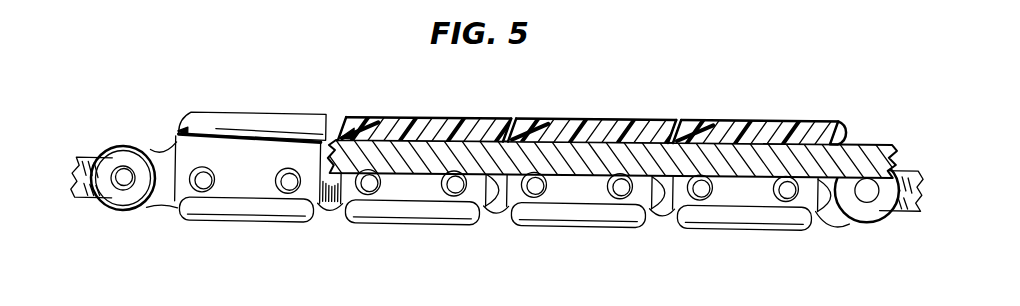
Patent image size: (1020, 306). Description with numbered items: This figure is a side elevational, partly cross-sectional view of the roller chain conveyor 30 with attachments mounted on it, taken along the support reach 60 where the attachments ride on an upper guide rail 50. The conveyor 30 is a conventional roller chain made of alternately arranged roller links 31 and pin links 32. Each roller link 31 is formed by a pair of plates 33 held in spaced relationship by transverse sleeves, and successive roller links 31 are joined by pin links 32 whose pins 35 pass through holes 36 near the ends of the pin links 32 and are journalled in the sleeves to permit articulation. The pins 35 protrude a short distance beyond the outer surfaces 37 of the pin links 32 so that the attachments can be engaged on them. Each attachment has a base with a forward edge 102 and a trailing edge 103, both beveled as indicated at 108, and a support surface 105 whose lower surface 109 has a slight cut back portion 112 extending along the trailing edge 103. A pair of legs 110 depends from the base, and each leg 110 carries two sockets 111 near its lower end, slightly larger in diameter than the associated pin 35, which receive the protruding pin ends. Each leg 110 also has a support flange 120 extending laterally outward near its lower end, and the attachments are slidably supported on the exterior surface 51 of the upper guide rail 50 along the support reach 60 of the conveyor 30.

The conveyor 30 is at (328, 215).
The roller link 31 is at (143, 213).
The pin link 32 is at (87, 200).
The plate 33 is at (160, 200).
The pin 35 is at (120, 168).
The hole 36 is at (113, 170).
The outer surface 37 is at (123, 205).
The upper guide rail 50 is at (893, 150).
The exterior surface 51 is at (860, 143).
The support reach 60 is at (533, 98).
The forward edge 102 is at (338, 116).
The trailing edge 103 is at (189, 112).
The support surface 105 is at (260, 113).
The bevel 108 is at (176, 112).
The lower surface 109 is at (269, 150).
The leg 110 is at (257, 191).
The socket 111 is at (292, 170).
The cut back portion 112 is at (172, 130).
The support flange 120 is at (258, 213).